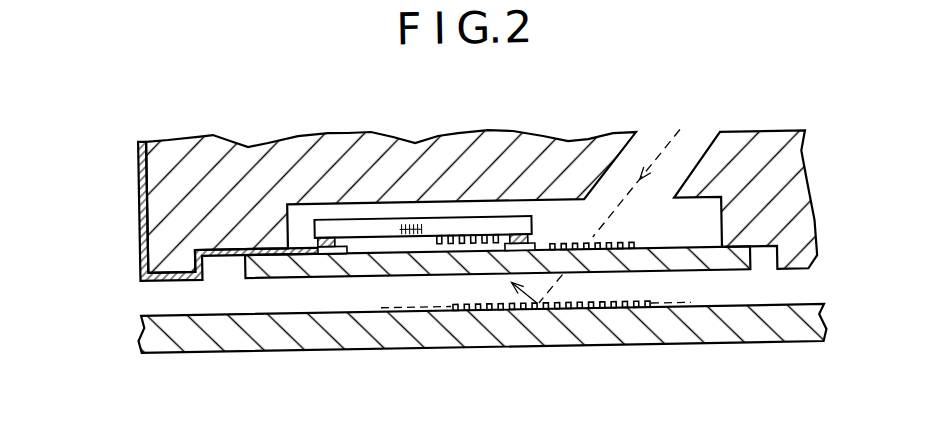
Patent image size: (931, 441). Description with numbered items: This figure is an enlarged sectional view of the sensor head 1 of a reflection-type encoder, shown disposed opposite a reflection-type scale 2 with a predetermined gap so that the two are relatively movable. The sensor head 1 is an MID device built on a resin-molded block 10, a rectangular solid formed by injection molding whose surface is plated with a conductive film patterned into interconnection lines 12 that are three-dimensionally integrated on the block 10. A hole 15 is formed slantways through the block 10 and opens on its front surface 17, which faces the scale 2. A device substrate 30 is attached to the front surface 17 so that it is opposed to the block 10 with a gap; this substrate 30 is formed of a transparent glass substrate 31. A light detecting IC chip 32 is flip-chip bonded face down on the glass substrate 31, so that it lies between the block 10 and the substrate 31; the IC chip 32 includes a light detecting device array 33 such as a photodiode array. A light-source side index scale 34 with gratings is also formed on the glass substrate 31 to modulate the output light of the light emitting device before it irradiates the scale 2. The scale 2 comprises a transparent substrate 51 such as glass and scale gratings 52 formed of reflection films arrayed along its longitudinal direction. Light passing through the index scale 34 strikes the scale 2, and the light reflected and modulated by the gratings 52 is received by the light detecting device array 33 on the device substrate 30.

The sensor head 1 is at (245, 143).
The reflection-type scale 2 is at (483, 348).
The resin-molded block 10 is at (370, 146).
The interconnection lines 12 is at (141, 190).
The hole 15 is at (709, 137).
The front surface 17 is at (167, 274).
The device substrate 30 is at (318, 263).
The glass substrate 31 is at (687, 266).
The light detecting IC chip 32 is at (446, 228).
The light detecting device array 33 is at (453, 238).
The light-source side index scale 34 is at (602, 243).
The transparent substrate 51 is at (523, 341).
The scale gratings 52 is at (627, 306).